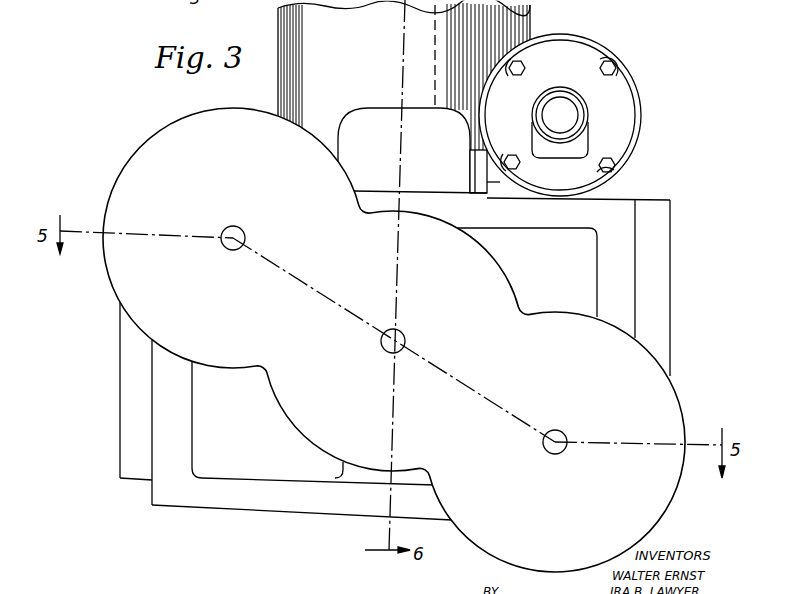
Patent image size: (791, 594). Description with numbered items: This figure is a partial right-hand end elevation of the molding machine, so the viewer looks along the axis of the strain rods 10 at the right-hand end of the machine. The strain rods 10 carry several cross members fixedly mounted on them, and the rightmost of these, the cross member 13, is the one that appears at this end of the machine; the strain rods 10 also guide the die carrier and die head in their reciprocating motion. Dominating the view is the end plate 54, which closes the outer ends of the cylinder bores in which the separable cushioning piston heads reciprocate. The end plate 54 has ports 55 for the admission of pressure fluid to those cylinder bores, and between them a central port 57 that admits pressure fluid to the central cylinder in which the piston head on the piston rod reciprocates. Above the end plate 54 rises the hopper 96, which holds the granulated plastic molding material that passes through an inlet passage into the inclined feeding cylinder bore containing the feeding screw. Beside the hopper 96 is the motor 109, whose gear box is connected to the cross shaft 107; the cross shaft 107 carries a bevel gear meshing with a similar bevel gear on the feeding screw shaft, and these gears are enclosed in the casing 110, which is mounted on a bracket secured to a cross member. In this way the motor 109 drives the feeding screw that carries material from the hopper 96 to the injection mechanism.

The strain rods 10 is at (130, 372).
The cross member 13 is at (618, 212).
The end plate 54 is at (494, 373).
The ports 55 is at (243, 232).
The central port 57 is at (404, 333).
The hopper 96 is at (530, 22).
The cross shaft 107 is at (500, 180).
The motor 109 is at (628, 103).
The casing 110 is at (423, 168).